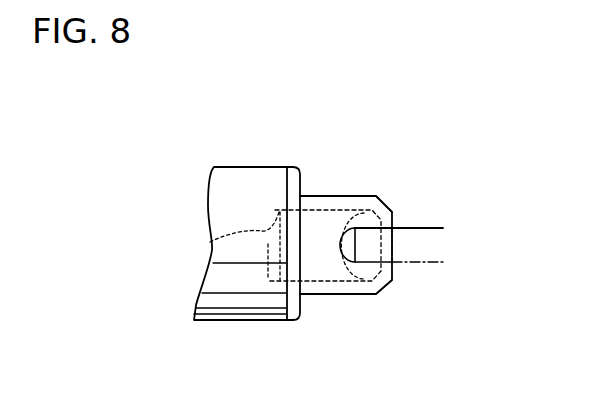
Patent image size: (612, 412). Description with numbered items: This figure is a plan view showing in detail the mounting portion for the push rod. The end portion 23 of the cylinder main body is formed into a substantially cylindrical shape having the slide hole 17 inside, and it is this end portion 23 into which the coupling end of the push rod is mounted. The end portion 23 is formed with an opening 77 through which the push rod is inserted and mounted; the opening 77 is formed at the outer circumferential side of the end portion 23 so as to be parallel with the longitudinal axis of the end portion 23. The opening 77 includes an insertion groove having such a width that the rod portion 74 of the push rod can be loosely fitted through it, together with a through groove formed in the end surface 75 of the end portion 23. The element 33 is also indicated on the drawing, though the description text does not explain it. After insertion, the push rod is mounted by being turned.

The end portion 23 is at (326, 284).
The slide hole 17 is at (325, 209).
The hidden engaging portion 33 is at (210, 242).
The rod portion 74 is at (428, 224).
The opening 77 is at (406, 205).
The end surface 75 is at (411, 285).